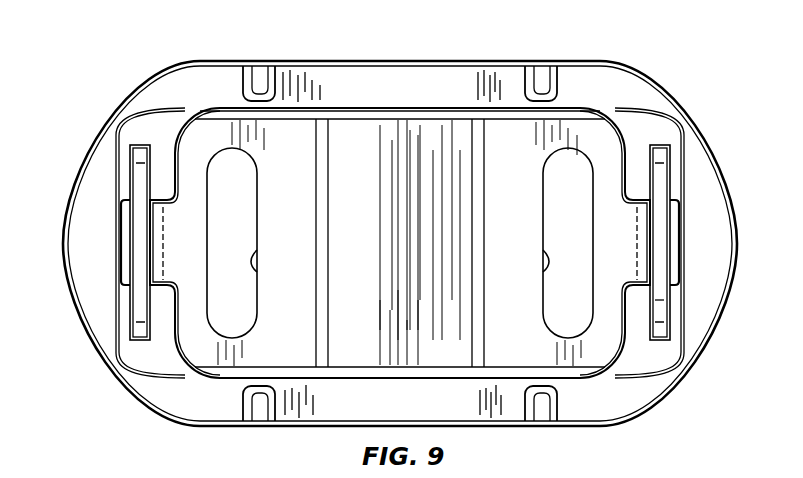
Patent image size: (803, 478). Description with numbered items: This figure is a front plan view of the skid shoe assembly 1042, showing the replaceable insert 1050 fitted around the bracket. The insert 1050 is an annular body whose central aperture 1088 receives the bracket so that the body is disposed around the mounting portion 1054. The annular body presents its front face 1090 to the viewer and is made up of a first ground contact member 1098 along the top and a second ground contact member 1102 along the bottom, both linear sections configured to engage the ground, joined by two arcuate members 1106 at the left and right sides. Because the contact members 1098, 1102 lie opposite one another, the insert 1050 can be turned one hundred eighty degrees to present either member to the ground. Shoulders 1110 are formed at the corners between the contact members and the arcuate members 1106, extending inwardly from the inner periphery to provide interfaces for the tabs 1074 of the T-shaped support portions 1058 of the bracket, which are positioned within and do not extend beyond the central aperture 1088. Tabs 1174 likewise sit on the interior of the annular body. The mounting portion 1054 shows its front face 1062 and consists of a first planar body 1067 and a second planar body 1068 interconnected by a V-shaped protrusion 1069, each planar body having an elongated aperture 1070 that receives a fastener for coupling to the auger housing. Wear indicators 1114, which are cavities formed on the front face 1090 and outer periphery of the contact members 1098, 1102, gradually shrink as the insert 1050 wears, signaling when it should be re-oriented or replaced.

The skid shoe assembly 1042 is at (114, 61).
The replaceable insert 1050 is at (637, 78).
The mounting portion 1054 is at (270, 335).
The support portions 1058 is at (128, 233).
The front face 1062 is at (306, 188).
The first planar body 1067 is at (583, 110).
The second planar body 1068 is at (213, 108).
The V-shaped protrusion 1069 is at (360, 110).
The elongated aperture 1070 is at (253, 262).
The tabs 1074 is at (140, 160).
The central aperture 1088 is at (447, 117).
The front face 1090 is at (422, 95).
The first ground contact member 1098 is at (300, 58).
The second ground contact member 1102 is at (318, 430).
The arcuate members 1106 is at (65, 250).
The shoulders 1110 is at (177, 128).
The wear indicators 1114 is at (260, 63).
The tabs 1174 is at (660, 310).